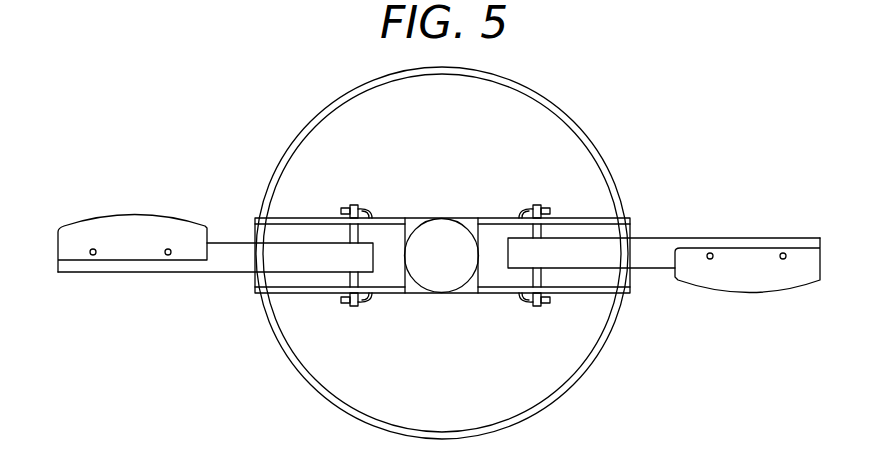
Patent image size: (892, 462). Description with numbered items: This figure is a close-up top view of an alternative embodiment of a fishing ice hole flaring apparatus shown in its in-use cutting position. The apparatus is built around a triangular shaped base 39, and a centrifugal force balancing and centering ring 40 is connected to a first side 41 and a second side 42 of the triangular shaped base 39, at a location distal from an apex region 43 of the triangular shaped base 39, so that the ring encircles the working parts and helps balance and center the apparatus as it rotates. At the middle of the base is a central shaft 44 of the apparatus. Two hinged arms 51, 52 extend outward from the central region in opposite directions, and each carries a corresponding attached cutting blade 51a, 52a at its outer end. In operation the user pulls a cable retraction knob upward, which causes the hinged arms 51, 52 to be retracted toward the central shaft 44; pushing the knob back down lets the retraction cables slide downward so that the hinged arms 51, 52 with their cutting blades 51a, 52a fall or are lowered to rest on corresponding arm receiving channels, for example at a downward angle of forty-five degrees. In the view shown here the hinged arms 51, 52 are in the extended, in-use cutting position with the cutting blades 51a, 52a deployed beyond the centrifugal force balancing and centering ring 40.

The triangular shaped base 39 is at (678, 95).
The centrifugal force balancing and centering ring 40 is at (568, 113).
The first side 41 is at (253, 280).
The second side 42 is at (630, 273).
The apex region 43 is at (414, 318).
The central shaft 44 is at (462, 290).
The hinged arm 51 is at (233, 242).
The cutting blade 51a is at (133, 208).
The hinged arm 52 is at (657, 240).
The cutting blade 52a is at (757, 300).